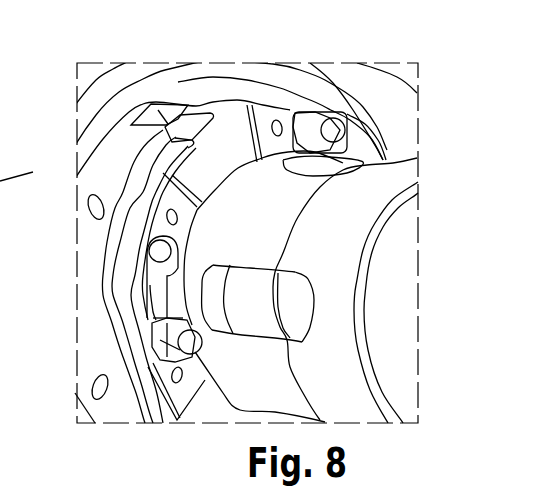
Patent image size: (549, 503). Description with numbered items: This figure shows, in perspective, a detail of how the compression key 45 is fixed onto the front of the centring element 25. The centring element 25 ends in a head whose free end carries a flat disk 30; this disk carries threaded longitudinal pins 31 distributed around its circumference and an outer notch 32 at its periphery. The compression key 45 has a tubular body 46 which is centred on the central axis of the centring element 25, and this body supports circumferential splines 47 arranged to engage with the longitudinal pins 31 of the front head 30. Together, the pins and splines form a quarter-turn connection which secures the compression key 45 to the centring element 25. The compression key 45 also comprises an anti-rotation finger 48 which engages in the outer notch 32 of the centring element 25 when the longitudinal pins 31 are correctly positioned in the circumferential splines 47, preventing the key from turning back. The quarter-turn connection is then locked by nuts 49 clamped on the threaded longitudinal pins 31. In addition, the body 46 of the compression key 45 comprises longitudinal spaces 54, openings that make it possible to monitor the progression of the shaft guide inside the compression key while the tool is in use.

The centring element 25 is at (98, 105).
The flat disk 30 is at (97, 243).
The threaded longitudinal pins 31 is at (157, 324).
The outer notch 32 is at (148, 118).
The compression key 45 is at (435, 178).
The tubular body 46 is at (250, 192).
The circumferential splines 47 is at (157, 288).
The anti-rotation finger 48 is at (185, 122).
The nuts 49 is at (155, 367).
The longitudinal spaces 54 is at (255, 297).